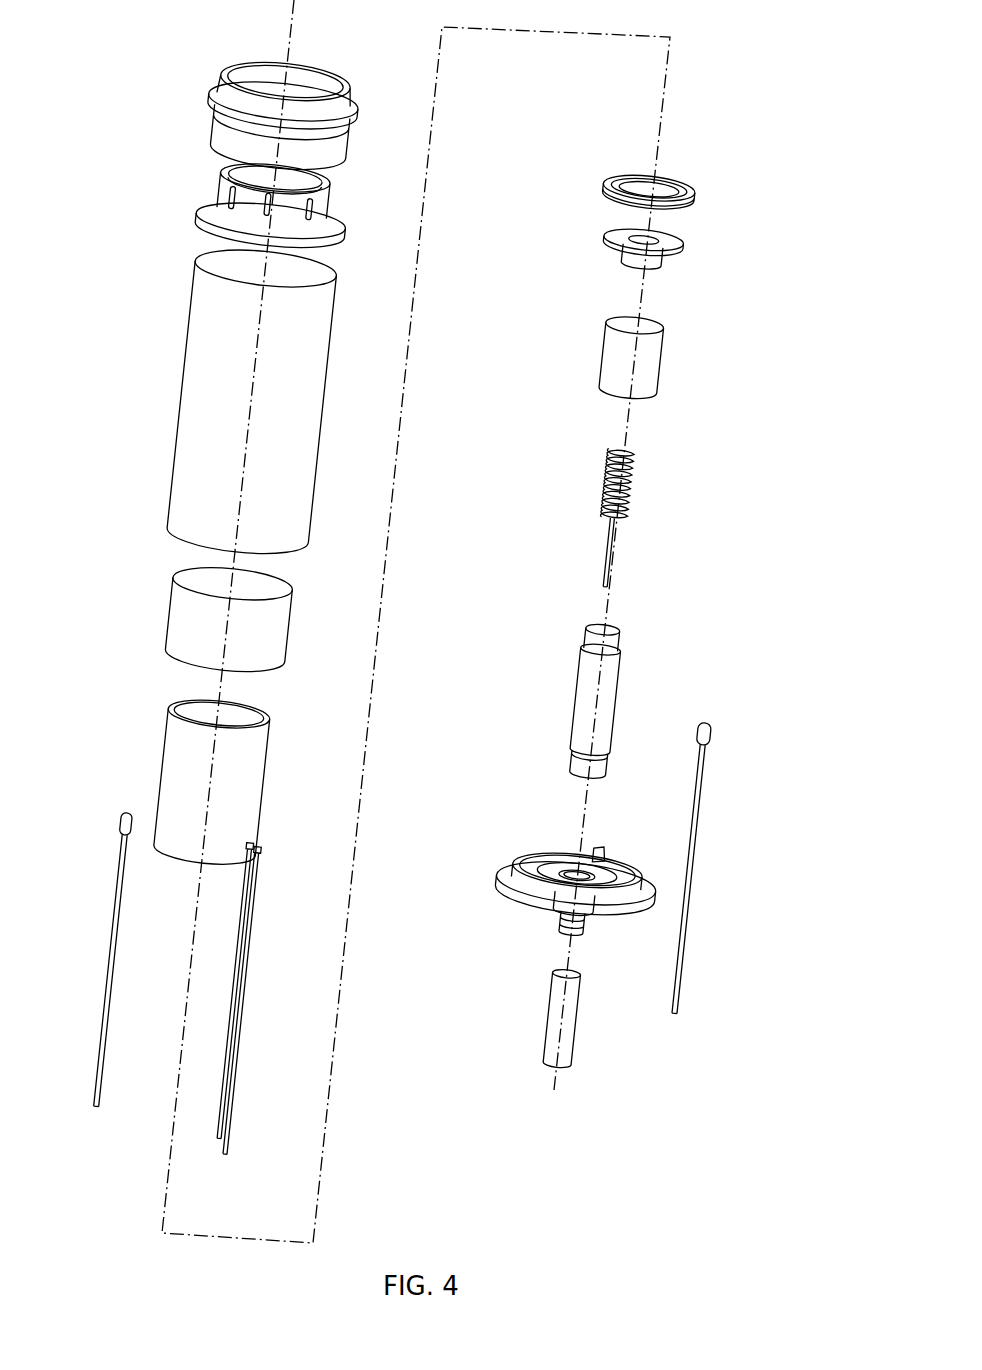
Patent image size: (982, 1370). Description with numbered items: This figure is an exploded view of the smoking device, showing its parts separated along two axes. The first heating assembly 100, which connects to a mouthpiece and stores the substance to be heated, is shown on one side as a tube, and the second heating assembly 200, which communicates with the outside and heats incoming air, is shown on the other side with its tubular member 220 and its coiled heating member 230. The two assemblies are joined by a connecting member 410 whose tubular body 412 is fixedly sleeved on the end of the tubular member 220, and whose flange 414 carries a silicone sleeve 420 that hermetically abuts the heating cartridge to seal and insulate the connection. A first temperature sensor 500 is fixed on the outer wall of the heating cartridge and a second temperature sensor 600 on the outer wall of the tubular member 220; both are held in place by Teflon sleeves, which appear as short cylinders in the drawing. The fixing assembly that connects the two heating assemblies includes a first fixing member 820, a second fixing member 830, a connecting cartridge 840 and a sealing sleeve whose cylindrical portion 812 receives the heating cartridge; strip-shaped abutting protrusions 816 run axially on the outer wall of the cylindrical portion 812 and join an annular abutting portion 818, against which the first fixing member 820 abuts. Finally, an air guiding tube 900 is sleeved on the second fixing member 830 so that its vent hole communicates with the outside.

The first heating assembly 100 is at (166, 777).
The second heating assembly 200 is at (723, 626).
The tubular member 220 is at (617, 675).
The heating member 230 is at (635, 485).
The connecting member 410 is at (727, 266).
The tubular body 412 is at (660, 263).
The flange 414 is at (680, 243).
The silicone sleeve 420 is at (700, 190).
The first temperature sensor 500 is at (125, 832).
The second temperature sensor 600 is at (712, 735).
The cylindrical portion 812 is at (201, 206).
The abutting protrusion 816 is at (211, 192).
The annular abutting portion 818 is at (199, 214).
The first fixing member 820 is at (206, 101).
The second fixing member 830 is at (655, 890).
The connecting cartridge 840 is at (186, 373).
The air guiding tube 900 is at (578, 1037).